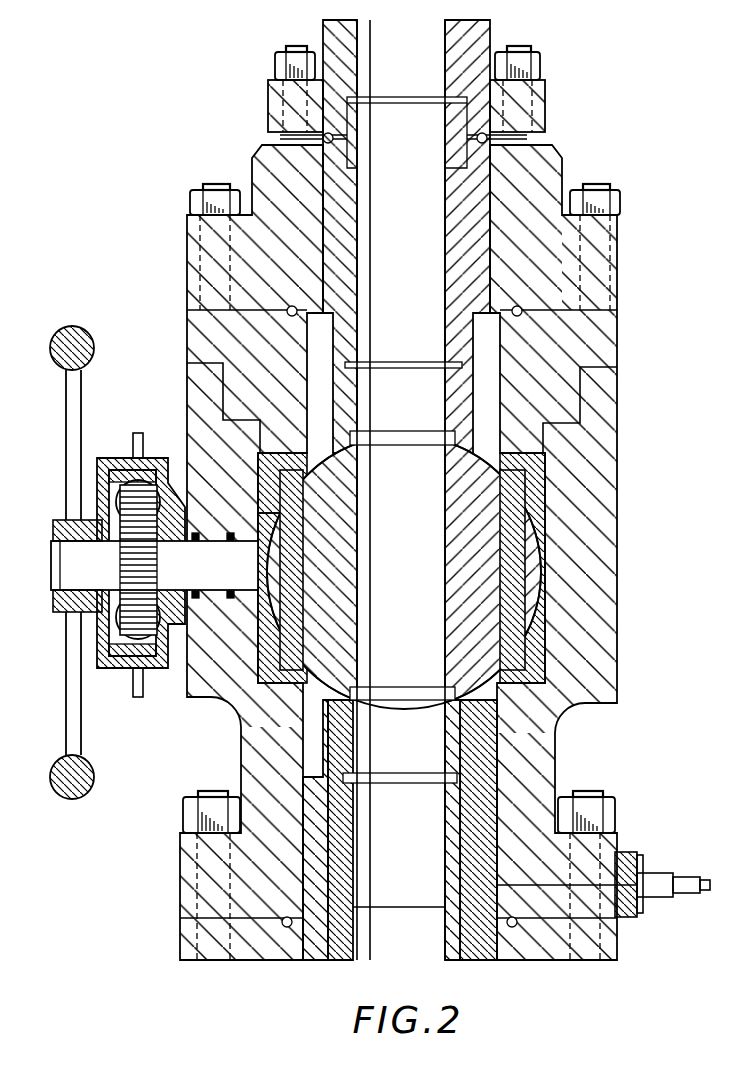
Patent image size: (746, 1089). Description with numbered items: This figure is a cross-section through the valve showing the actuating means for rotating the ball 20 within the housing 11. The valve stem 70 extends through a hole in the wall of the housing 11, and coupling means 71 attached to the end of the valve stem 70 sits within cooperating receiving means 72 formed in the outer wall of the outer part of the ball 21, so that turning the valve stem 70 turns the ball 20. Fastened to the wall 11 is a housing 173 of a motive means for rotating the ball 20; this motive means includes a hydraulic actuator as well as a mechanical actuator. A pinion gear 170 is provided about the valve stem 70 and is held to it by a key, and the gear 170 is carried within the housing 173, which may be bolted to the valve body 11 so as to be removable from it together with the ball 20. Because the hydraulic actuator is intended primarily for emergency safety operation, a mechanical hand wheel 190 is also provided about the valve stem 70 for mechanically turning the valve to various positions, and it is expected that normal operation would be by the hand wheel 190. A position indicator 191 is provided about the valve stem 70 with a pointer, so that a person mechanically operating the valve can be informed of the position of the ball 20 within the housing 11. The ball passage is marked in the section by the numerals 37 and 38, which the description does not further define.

The ball 20 is at (312, 700).
The housing wall 11 is at (215, 698).
The outer part of the ball 21 is at (290, 640).
The ball 37 is at (387, 565).
The ball flow passage 38 is at (387, 597).
The valve stem 70 is at (192, 572).
The coupling means 71 is at (263, 540).
The receiving means 72 is at (258, 503).
The pinion gear 170 is at (133, 620).
The housing of the motive means 173 is at (158, 462).
The mechanical hand wheel 190 is at (84, 382).
The position indicator 191 is at (101, 462).